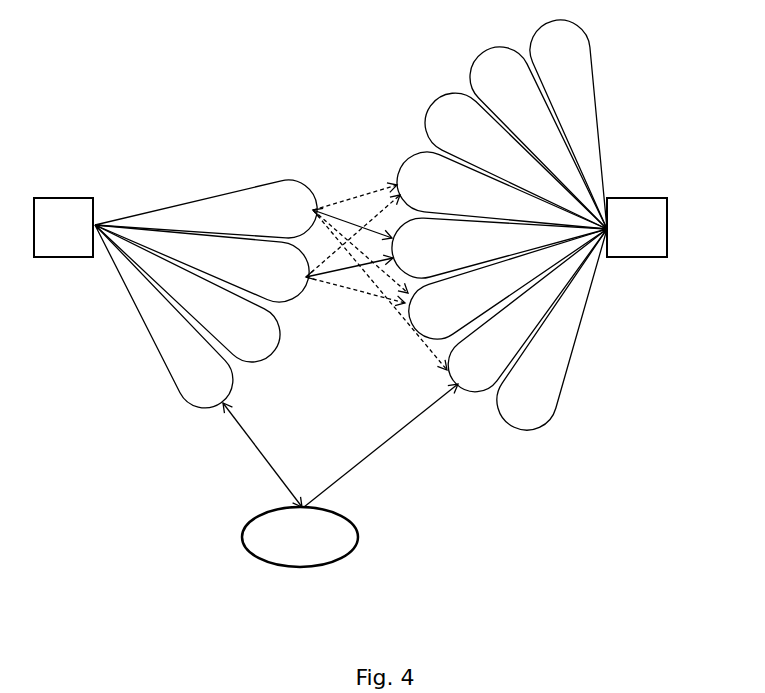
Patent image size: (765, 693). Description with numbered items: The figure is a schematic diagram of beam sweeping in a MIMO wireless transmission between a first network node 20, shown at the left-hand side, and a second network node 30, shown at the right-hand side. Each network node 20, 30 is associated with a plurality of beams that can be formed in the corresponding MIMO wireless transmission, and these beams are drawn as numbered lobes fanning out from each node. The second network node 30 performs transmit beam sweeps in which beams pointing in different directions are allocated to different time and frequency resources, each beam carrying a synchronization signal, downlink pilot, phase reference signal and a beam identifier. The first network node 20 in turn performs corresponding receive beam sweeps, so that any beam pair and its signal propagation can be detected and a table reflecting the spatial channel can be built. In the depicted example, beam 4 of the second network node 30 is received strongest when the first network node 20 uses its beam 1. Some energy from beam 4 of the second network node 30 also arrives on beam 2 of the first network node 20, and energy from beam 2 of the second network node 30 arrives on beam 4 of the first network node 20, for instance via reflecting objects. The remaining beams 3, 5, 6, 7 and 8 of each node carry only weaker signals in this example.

The first network node 20 is at (72, 208).
The second network node 30 is at (645, 207).
The beam 1 is at (351, 305).
The beam 2 is at (351, 308).
The beam 3 is at (351, 293).
The beam 4 is at (351, 313).
The beam 5 is at (502, 190).
The beam 6 is at (516, 161).
The beam 7 is at (538, 138).
The beam 8 is at (568, 124).